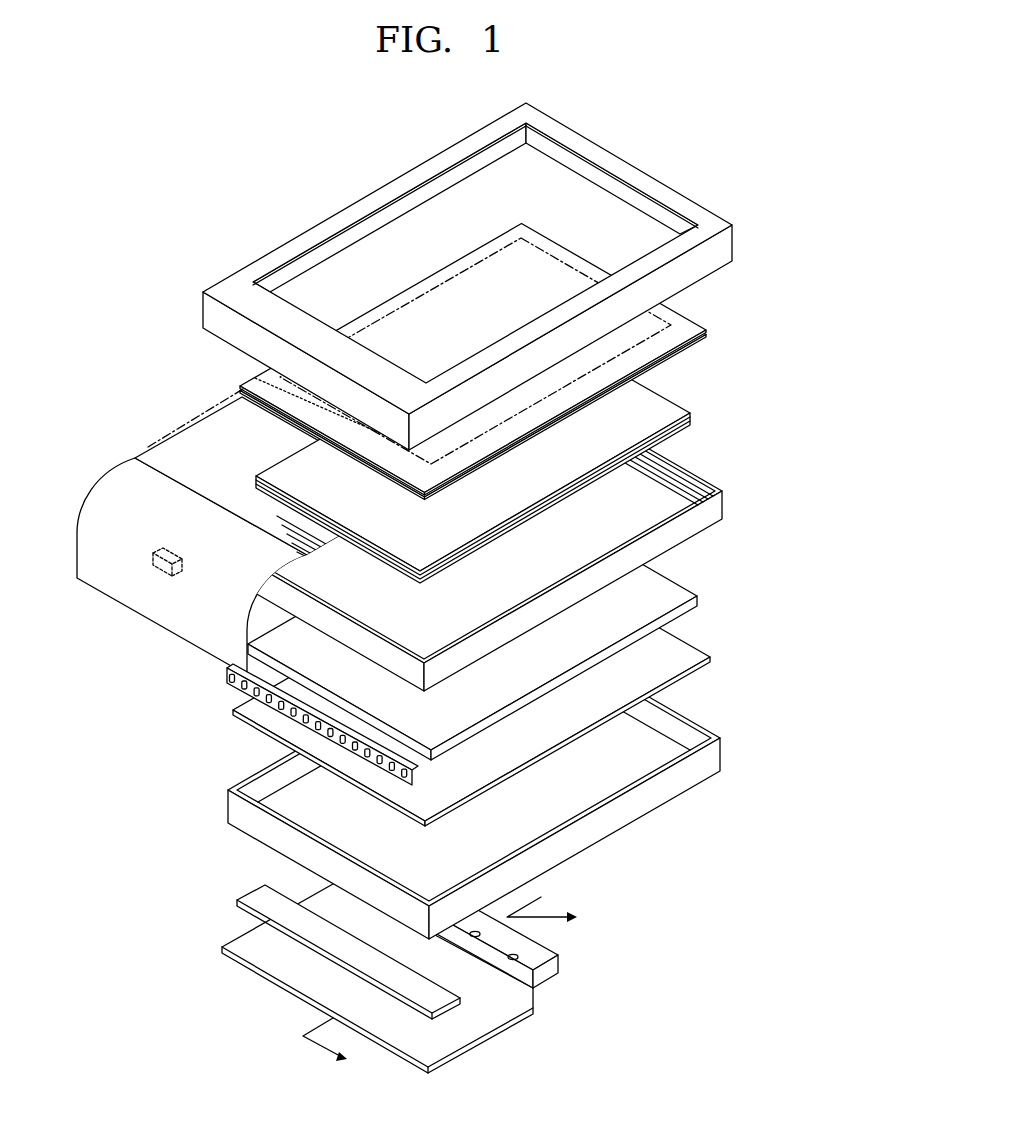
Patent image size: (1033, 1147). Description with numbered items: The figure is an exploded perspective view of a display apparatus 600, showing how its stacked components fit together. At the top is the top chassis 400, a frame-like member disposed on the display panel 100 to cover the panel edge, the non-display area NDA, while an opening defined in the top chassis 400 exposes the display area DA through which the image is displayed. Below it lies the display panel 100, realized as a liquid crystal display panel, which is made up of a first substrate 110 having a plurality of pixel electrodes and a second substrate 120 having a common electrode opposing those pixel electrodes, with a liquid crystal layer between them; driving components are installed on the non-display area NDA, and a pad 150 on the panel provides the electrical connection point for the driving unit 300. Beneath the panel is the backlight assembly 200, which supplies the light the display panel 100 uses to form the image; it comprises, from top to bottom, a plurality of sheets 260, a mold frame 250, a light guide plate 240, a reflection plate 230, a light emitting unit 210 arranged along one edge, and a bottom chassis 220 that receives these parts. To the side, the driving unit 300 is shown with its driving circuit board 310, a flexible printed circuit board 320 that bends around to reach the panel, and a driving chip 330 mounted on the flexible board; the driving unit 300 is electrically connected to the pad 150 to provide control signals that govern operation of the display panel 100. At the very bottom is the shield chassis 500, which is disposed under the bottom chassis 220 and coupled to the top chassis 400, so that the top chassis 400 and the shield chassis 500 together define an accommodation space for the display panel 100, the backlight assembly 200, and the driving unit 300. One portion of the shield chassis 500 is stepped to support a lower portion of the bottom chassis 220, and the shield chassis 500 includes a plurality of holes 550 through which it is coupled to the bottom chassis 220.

The display apparatus 600 is at (636, 136).
The top chassis 400 is at (734, 247).
The display panel 100 is at (486, 347).
The second substrate 120 is at (685, 317).
The first substrate 110 is at (685, 360).
The pad 150 is at (257, 386).
The display area DA is at (560, 261).
The non-display area NDA is at (487, 250).
The backlight assembly 200 is at (503, 629).
The sheets 260 is at (517, 451).
The mold frame 250 is at (699, 523).
The light guide plate 240 is at (690, 609).
The reflection plate 230 is at (683, 660).
The bottom chassis 220 is at (695, 764).
The light emitting unit 210 is at (277, 706).
The driving unit 300 is at (262, 708).
The driving chip 330 is at (167, 570).
The flexible printed circuit board 320 is at (198, 634).
The driving circuit board 310 is at (272, 902).
The shield chassis 500 is at (376, 976).
The holes 550 is at (518, 958).